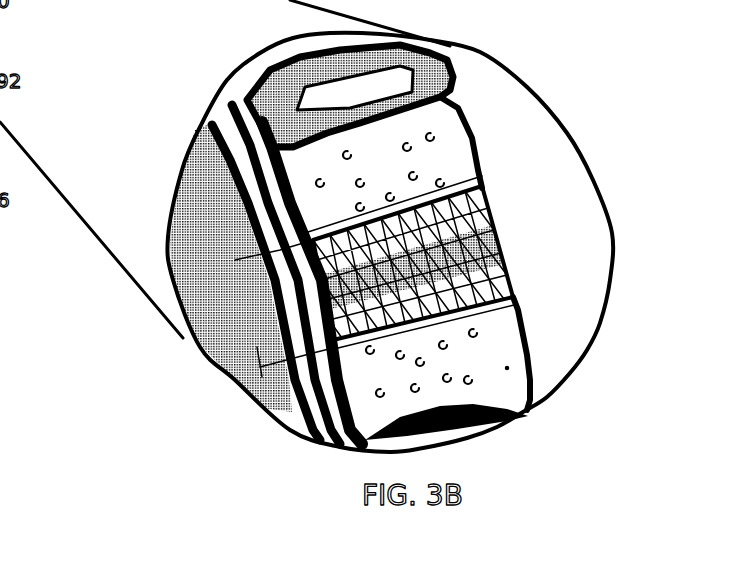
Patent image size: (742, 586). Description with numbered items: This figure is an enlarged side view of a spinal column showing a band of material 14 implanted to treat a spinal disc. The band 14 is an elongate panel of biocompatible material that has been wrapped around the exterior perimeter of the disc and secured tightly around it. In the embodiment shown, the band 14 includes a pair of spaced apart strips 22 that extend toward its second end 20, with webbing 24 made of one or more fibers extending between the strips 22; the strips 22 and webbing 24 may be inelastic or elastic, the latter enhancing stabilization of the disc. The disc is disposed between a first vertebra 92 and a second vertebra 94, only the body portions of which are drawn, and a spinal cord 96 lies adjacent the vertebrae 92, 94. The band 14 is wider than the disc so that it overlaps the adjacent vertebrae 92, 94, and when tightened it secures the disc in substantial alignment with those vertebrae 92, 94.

The band of material 14 is at (523, 267).
The second end 20 is at (497, 248).
The strips 22 is at (477, 187).
The webbing 24 is at (487, 203).
The first vertebra 92 is at (510, 332).
The second vertebra 94 is at (457, 135).
The spinal cord 96 is at (313, 397).